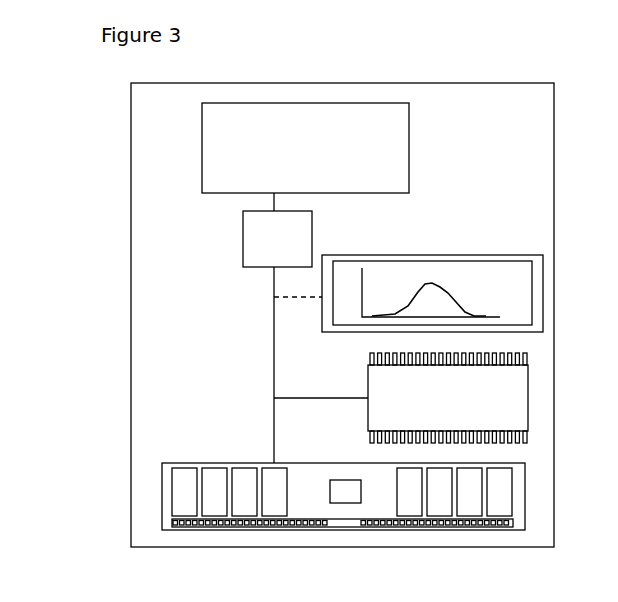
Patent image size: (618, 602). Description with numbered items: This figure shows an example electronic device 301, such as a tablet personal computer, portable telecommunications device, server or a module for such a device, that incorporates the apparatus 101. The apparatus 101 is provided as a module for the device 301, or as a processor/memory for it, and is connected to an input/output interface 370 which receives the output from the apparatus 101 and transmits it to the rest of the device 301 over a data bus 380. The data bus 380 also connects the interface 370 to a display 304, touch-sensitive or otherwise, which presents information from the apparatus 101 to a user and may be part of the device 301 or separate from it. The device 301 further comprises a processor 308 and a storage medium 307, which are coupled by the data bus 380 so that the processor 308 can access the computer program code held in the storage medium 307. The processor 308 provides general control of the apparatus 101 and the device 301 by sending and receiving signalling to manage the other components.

The electronic device 301 is at (116, 518).
The apparatus 101 is at (324, 164).
The input/output interface 370 is at (296, 252).
The data bus 380 is at (273, 361).
The display 304 is at (447, 270).
The processor 308 is at (471, 414).
The storage medium 307 is at (308, 504).